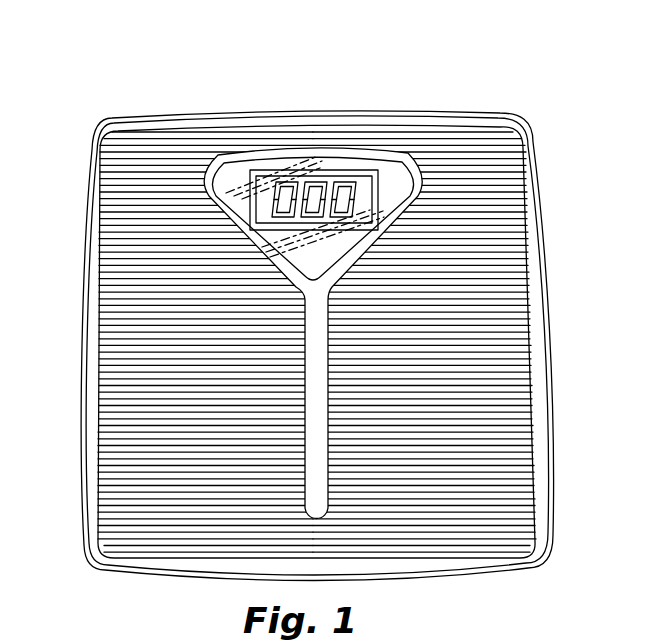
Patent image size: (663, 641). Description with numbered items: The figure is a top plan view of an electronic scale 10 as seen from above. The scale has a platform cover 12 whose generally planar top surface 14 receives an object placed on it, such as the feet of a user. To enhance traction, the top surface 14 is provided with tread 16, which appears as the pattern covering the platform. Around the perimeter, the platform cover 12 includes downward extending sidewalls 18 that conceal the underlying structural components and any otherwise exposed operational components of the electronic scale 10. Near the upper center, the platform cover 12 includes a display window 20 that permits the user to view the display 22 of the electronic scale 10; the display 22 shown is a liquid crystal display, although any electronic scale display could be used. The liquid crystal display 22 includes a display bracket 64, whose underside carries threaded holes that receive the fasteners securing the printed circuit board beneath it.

The electronic scale 10 is at (565, 68).
The platform cover 12 is at (137, 112).
The top surface 14 is at (152, 190).
The tread 16 is at (480, 187).
The sidewalls 18 is at (187, 106).
The display window 20 is at (440, 118).
The display 22 is at (327, 170).
The display bracket 64 is at (257, 170).